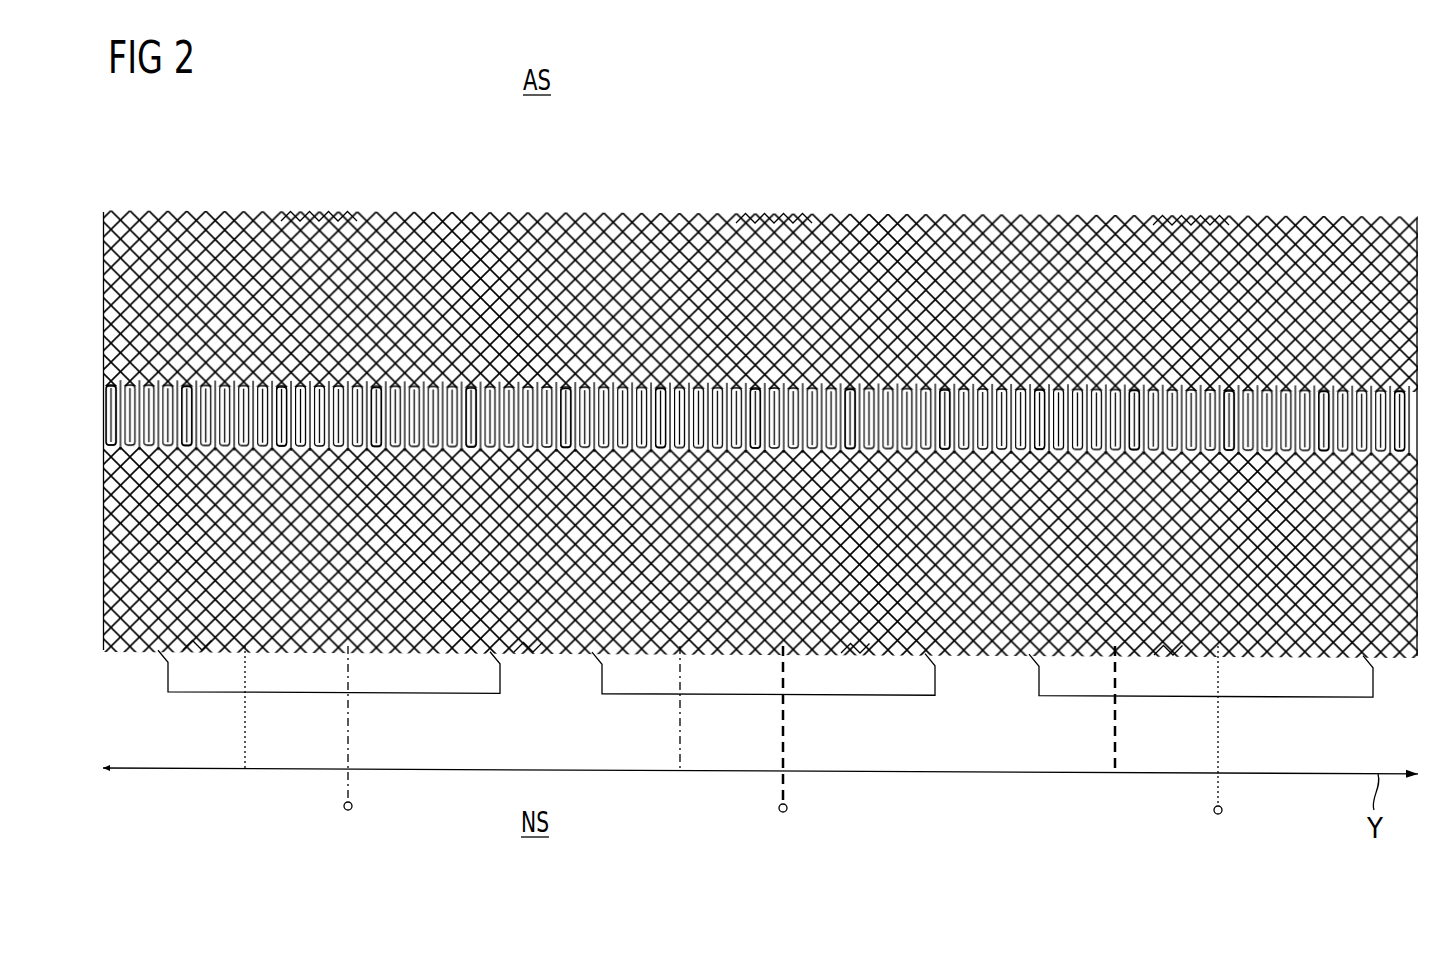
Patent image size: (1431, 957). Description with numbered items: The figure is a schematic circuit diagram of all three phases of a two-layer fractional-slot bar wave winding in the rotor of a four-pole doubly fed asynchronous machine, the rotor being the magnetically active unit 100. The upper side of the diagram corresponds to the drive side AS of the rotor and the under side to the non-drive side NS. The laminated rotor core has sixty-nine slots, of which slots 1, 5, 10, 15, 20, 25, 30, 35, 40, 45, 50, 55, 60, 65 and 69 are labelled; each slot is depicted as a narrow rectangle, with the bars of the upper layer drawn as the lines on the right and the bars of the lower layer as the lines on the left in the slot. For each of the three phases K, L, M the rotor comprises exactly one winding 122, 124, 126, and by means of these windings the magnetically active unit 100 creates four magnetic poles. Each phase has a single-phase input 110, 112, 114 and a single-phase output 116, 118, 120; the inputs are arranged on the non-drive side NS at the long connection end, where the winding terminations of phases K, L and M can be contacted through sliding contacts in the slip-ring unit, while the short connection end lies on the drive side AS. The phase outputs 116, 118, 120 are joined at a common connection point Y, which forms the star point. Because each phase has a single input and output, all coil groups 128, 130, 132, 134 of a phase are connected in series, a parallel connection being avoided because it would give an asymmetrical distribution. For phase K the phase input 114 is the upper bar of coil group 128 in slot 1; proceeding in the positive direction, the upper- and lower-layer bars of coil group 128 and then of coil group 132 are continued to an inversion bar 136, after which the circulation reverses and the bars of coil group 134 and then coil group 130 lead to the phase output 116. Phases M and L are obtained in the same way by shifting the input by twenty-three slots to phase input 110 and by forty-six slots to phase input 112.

The slot 1 is at (111, 384).
The slot 5 is at (187, 384).
The slot 10 is at (282, 384).
The slot 15 is at (376, 384).
The slot 20 is at (471, 385).
The slot 25 is at (566, 385).
The slot 30 is at (661, 385).
The slot 35 is at (755, 386).
The slot 40 is at (850, 386).
The slot 45 is at (945, 387).
The slot 50 is at (1040, 387).
The slot 55 is at (1134, 388).
The slot 60 is at (1229, 388).
The slot 65 is at (1324, 389).
The slot 69 is at (1400, 389).
The magnetically active unit 100 is at (1116, 104).
The phase input 110 is at (352, 804).
The phase input 112 is at (788, 806).
The phase input 114 is at (1223, 808).
The phase output 116 is at (245, 771).
The phase output 118 is at (680, 773).
The phase output 120 is at (1115, 775).
The winding 122 is at (322, 196).
The winding 124 is at (778, 198).
The winding 126 is at (1191, 200).
The coil group 128 is at (198, 666).
The coil group 130 is at (529, 668).
The coil group 132 is at (857, 669).
The coil group 134 is at (1171, 671).
The inversion bar 136 is at (445, 694).